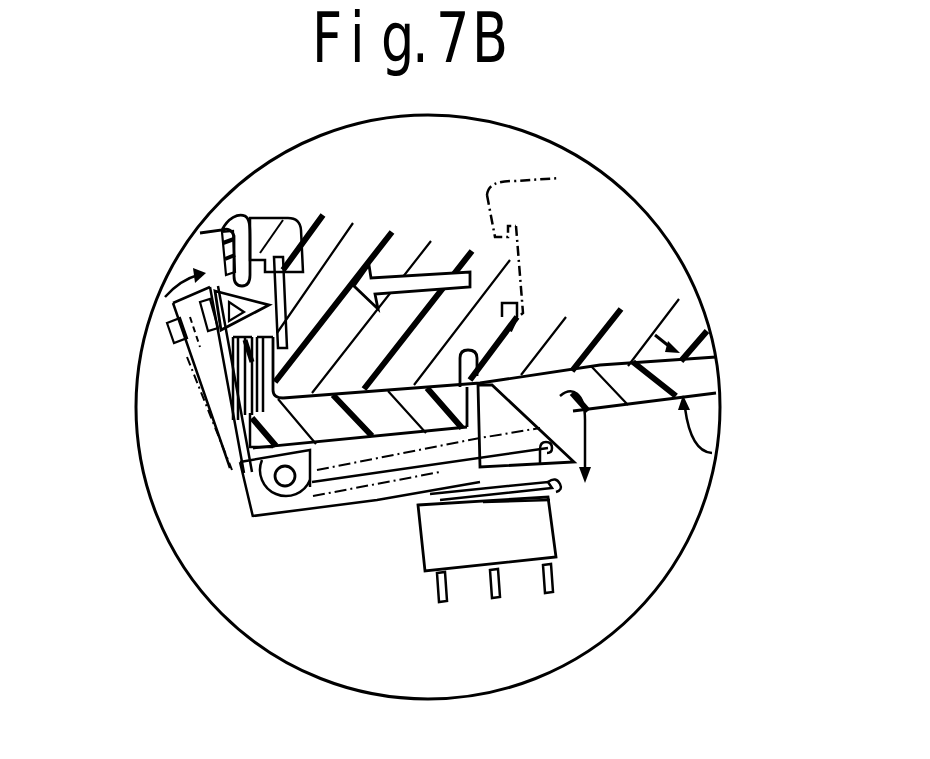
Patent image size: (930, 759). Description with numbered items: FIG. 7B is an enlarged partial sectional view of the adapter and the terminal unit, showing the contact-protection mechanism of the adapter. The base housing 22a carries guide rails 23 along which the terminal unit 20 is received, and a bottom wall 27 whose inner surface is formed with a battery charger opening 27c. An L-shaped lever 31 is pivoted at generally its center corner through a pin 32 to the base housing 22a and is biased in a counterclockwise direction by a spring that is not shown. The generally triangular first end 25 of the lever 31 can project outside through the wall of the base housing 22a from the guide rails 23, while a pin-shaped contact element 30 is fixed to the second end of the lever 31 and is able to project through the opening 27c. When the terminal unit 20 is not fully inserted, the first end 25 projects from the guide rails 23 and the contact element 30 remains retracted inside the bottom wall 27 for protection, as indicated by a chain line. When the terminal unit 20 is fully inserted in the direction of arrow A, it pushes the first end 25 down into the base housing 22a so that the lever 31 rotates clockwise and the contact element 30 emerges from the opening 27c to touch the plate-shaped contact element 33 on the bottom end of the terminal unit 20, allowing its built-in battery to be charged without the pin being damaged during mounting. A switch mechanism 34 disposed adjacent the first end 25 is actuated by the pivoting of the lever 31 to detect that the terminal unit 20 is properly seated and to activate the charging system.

The portable terminal unit 20 is at (695, 293).
The guide rails 23 is at (686, 383).
The base housing 22a is at (712, 453).
The first end of lever 25 is at (575, 374).
The bottom wall 27 is at (233, 420).
The battery charger opening 27c is at (218, 228).
The pin-shaped contact element 30 is at (216, 290).
The L-shaped lever 31 is at (352, 505).
The pin 32 is at (283, 478).
The plate-shaped contact element 33 is at (297, 223).
The switch mechanism 34 is at (560, 548).
The insertion direction arrow A is at (427, 272).